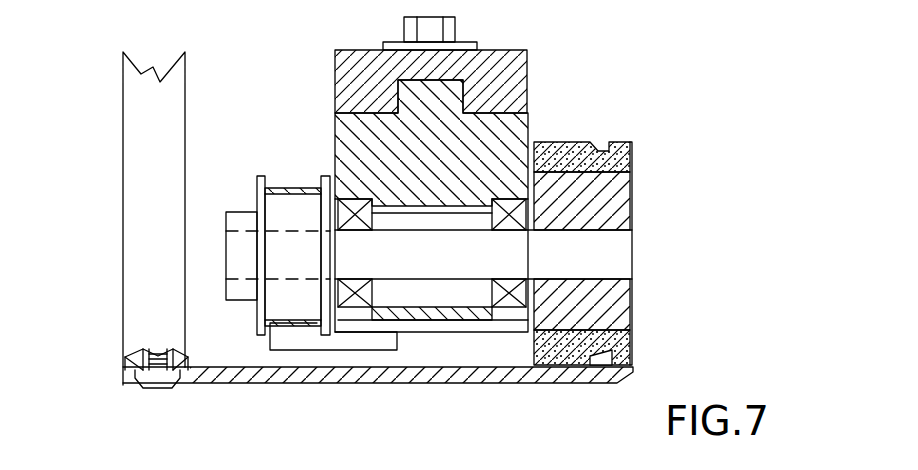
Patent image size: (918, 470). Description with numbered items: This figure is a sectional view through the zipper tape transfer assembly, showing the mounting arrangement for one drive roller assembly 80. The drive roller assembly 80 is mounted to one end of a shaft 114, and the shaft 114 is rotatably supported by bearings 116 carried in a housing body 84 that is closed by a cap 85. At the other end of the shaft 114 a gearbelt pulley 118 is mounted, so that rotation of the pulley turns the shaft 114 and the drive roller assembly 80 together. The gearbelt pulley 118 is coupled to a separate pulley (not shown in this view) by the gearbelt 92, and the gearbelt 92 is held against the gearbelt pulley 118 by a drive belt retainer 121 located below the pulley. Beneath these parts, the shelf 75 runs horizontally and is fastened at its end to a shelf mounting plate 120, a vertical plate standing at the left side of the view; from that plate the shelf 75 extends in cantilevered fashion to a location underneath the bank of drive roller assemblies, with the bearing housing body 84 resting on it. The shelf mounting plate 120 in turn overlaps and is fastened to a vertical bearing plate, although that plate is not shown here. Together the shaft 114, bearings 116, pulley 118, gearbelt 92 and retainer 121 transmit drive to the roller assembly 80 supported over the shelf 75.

The shelf 75 is at (585, 383).
The drive roller assembly 80 is at (631, 150).
The bearing housing body 84 is at (350, 132).
The housing cap 85 is at (506, 63).
The gearbelt 92 is at (296, 187).
The shaft 114 is at (452, 252).
The bearings 116 is at (357, 306).
The gearbelt pulley 118 is at (257, 317).
The shelf mounting plate 120 is at (124, 225).
The drive belt retainer 121 is at (288, 351).